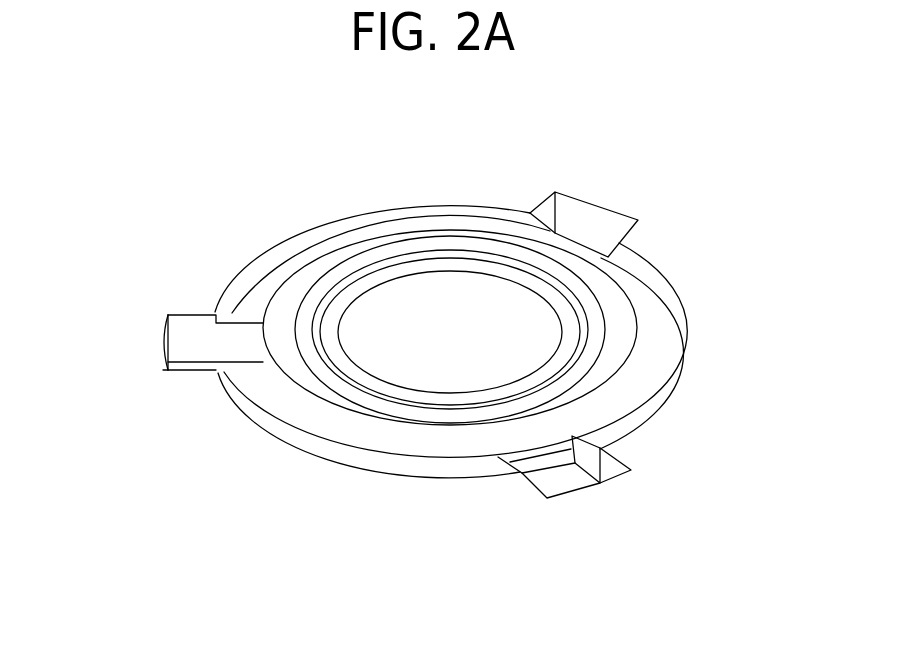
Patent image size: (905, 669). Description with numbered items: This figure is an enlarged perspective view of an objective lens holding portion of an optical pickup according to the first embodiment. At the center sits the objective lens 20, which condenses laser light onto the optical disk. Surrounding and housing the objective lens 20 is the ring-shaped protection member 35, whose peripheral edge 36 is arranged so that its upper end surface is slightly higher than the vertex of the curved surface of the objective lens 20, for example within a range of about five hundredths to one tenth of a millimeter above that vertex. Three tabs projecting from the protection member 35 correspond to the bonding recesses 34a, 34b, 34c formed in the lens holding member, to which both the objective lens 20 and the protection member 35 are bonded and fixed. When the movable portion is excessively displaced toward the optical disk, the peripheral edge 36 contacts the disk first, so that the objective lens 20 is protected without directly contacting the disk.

The objective lens 20 is at (497, 337).
The protection member 35 is at (390, 440).
The peripheral edge 36 is at (303, 270).
The bonding recess 34a is at (207, 342).
The bonding recess 34b is at (577, 482).
The bonding recess 34c is at (587, 210).